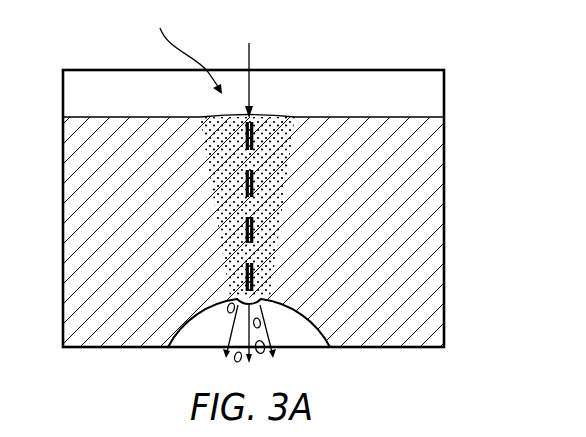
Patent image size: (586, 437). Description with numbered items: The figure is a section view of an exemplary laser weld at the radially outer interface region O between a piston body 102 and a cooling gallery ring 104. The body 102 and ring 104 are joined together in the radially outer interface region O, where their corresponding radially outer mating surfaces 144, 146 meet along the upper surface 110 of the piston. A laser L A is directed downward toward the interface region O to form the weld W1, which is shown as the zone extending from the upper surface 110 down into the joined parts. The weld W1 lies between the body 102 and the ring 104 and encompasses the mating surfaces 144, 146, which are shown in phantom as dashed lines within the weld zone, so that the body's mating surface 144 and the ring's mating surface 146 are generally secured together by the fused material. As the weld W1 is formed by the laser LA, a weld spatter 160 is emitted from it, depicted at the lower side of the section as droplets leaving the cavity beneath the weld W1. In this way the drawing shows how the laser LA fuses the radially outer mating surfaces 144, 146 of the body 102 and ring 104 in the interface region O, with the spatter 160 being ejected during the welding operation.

The body 102 is at (137, 293).
The cooling gallery ring 104 is at (373, 183).
The upper surface 110 is at (125, 117).
The radially outer mating surface of the body 144 is at (243, 283).
The radially outer mating surface of the ring 146 is at (253, 271).
The weld spatter 160 is at (218, 340).
The weld W1 is at (272, 142).
The laser LA is at (249, 48).
The radially outer interface region O is at (189, 49).